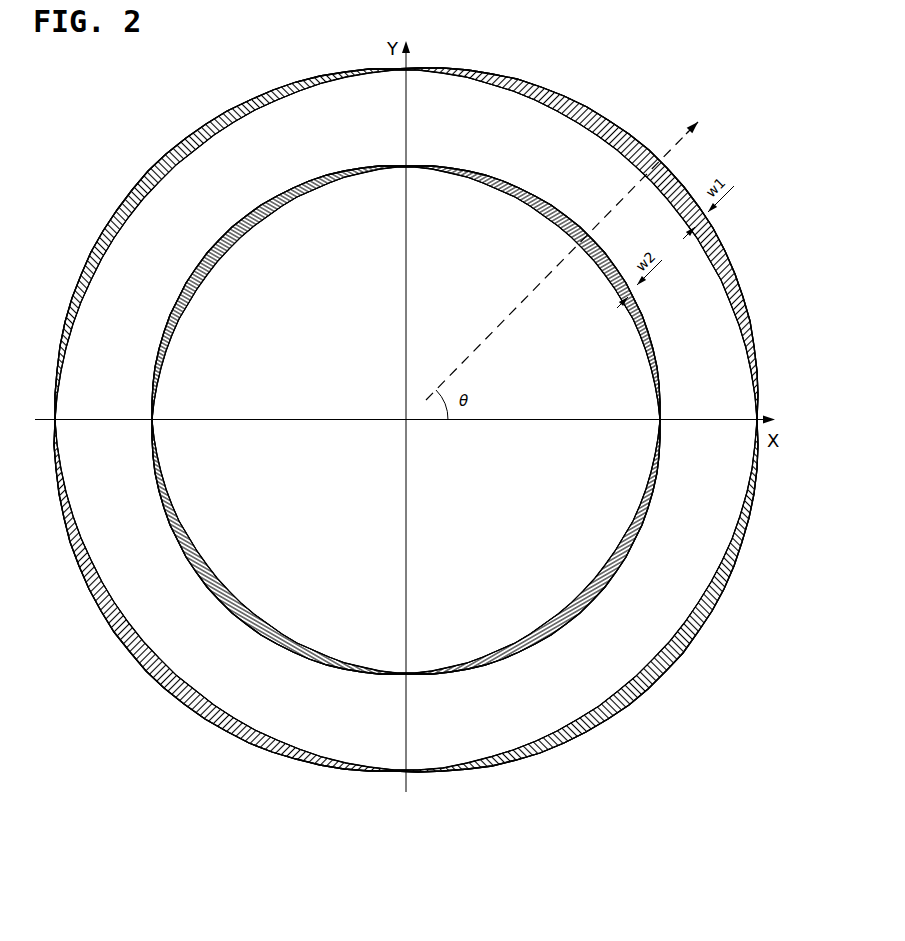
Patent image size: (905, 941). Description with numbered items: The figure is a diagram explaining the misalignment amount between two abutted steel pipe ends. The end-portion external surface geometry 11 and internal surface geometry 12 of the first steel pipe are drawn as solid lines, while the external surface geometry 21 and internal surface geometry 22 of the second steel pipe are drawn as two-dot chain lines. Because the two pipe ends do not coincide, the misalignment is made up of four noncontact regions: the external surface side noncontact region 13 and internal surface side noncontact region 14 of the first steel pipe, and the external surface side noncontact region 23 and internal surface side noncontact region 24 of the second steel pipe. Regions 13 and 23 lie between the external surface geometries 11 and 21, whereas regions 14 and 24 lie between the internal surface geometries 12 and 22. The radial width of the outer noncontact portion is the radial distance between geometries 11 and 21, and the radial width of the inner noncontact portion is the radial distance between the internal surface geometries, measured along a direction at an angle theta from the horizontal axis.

The external surface geometry of the first steel pipe 11 is at (592, 104).
The internal surface geometry of the first steel pipe 12 is at (296, 232).
The external surface side noncontact region of the first steel pipe 13 is at (626, 133).
The internal surface side noncontact region of the first steel pipe 14 is at (250, 236).
The external surface geometry of the second steel pipe 21 is at (205, 120).
The internal surface geometry of the second steel pipe 22 is at (514, 195).
The external surface side noncontact region of the second steel pipe 23 is at (180, 148).
The internal surface side noncontact region of the second steel pipe 24 is at (556, 216).